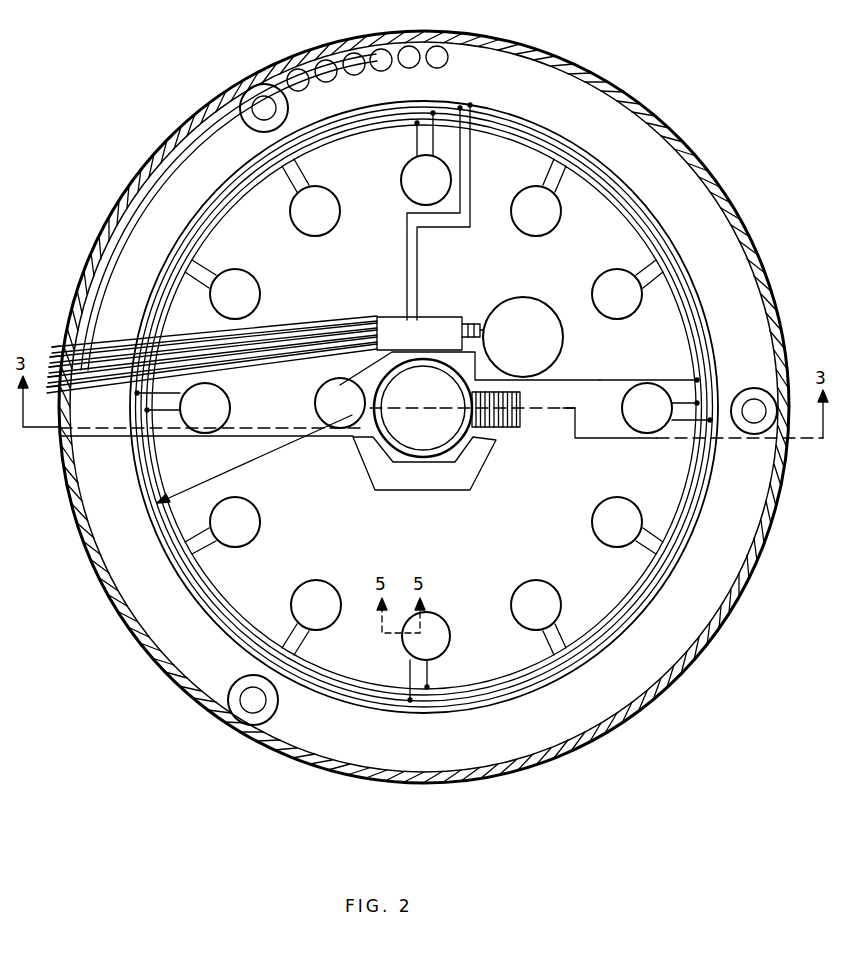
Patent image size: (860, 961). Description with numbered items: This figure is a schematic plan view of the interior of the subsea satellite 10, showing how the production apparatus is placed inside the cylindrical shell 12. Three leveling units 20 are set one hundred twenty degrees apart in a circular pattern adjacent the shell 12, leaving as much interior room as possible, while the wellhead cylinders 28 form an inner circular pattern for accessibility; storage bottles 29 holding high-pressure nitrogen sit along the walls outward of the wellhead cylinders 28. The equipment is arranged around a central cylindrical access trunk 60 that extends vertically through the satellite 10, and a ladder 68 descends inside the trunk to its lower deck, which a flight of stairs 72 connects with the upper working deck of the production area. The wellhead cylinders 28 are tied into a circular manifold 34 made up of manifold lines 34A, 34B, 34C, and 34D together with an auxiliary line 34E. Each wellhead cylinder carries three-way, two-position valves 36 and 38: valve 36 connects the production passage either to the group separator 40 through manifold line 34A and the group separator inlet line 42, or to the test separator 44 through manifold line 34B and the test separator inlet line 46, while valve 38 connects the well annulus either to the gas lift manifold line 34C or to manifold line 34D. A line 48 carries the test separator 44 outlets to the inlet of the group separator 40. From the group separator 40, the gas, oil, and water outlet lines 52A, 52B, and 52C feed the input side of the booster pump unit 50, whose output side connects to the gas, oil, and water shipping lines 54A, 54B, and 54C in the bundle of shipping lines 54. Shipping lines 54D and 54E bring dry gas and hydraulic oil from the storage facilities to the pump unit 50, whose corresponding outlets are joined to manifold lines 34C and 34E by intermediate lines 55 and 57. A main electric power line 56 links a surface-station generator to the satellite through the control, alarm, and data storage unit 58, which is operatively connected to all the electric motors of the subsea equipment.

The subsea satellite 10 is at (598, 80).
The cylindrical shell 12 is at (95, 592).
The leveling units 20 is at (259, 98).
The wellhead cylinders 28 is at (403, 176).
The storage bottles 29 is at (439, 46).
The circular manifold 34 is at (610, 194).
The manifold line 34A is at (649, 212).
The manifold line 34B is at (657, 232).
The gas lift manifold line 34C is at (661, 248).
The manifold line 34D is at (664, 264).
The auxiliary line 34E is at (667, 280).
The three-way, two-position valve 36 is at (294, 652).
The three-way, two-position valve 38 is at (268, 655).
The group separator 40 is at (562, 343).
The group separator inlet line 42 is at (608, 380).
The test separator 44 is at (320, 410).
The test separator inlet line 46 is at (233, 469).
The line 48 is at (370, 378).
The booster pump unit 50 is at (402, 328).
The gas outlet line 52A is at (468, 324).
The oil outlet line 52B is at (464, 328).
The water outlet line 52C is at (477, 324).
The bundle of shipping lines 54 is at (79, 380).
The gas shipping line 54A is at (70, 385).
The oil shipping line 54B is at (74, 375).
The water shipping line 54C is at (78, 365).
The dry gas shipping line 54D is at (84, 355).
The hydraulic oil shipping line 54E is at (92, 345).
The intermediate line 55 is at (407, 258).
The main electric power line 56 is at (115, 437).
The intermediate line 57 is at (472, 170).
The control, alarm, and data storage unit 58 is at (428, 482).
The central cylindrical access trunk 60 is at (423, 408).
The ladder 68 is at (483, 549).
The flight of stairs 72 is at (495, 427).